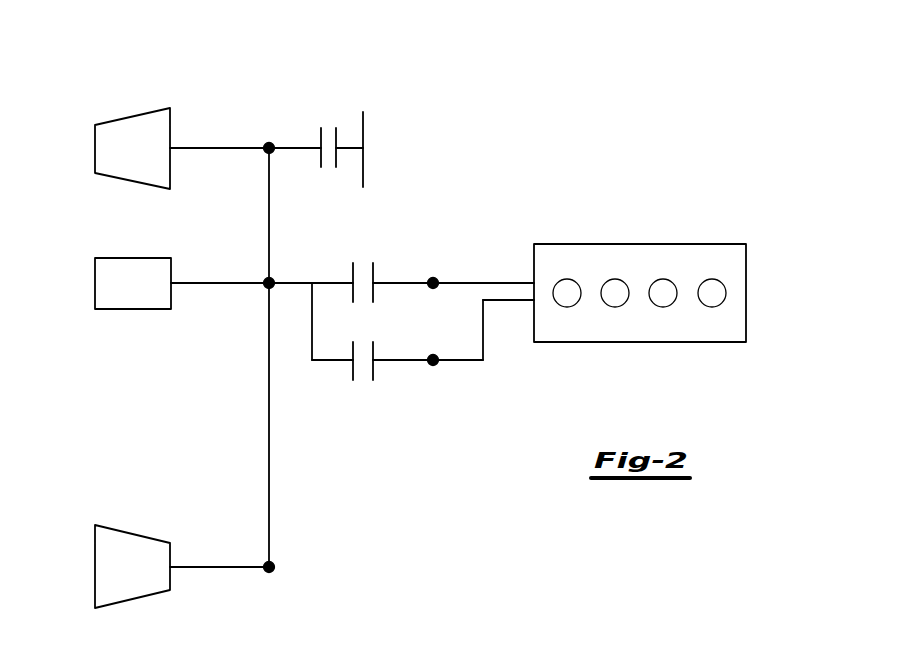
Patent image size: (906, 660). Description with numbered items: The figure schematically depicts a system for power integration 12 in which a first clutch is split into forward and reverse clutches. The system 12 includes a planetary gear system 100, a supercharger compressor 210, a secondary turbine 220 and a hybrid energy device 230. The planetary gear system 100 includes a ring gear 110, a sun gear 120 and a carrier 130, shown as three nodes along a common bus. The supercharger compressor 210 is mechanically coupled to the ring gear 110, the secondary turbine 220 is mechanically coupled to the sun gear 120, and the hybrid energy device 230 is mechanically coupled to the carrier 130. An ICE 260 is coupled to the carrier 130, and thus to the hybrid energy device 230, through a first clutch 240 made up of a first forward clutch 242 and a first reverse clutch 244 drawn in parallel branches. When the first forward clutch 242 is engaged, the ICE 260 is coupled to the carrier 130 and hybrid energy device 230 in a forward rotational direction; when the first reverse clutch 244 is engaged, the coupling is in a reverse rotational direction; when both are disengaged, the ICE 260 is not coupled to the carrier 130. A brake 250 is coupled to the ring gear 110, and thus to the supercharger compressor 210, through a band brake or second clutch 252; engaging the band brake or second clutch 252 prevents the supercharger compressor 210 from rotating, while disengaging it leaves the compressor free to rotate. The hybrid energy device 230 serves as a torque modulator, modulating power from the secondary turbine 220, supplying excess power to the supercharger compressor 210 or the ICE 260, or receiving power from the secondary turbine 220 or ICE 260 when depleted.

The system for power integration 12 is at (585, 142).
The planetary gear system 100 is at (212, 391).
The ring gear 110 is at (267, 142).
The sun gear 120 is at (277, 565).
The carrier 130 is at (262, 279).
The supercharger compressor 210 is at (132, 117).
The secondary turbine 220 is at (124, 533).
The hybrid energy device 230 is at (95, 283).
The first clutch 240 is at (401, 321).
The first forward clutch 242 is at (362, 254).
The first reverse clutch 244 is at (362, 392).
The brake 250 is at (365, 140).
The band brake or second clutch 252 is at (327, 121).
The ICE 260 is at (756, 282).